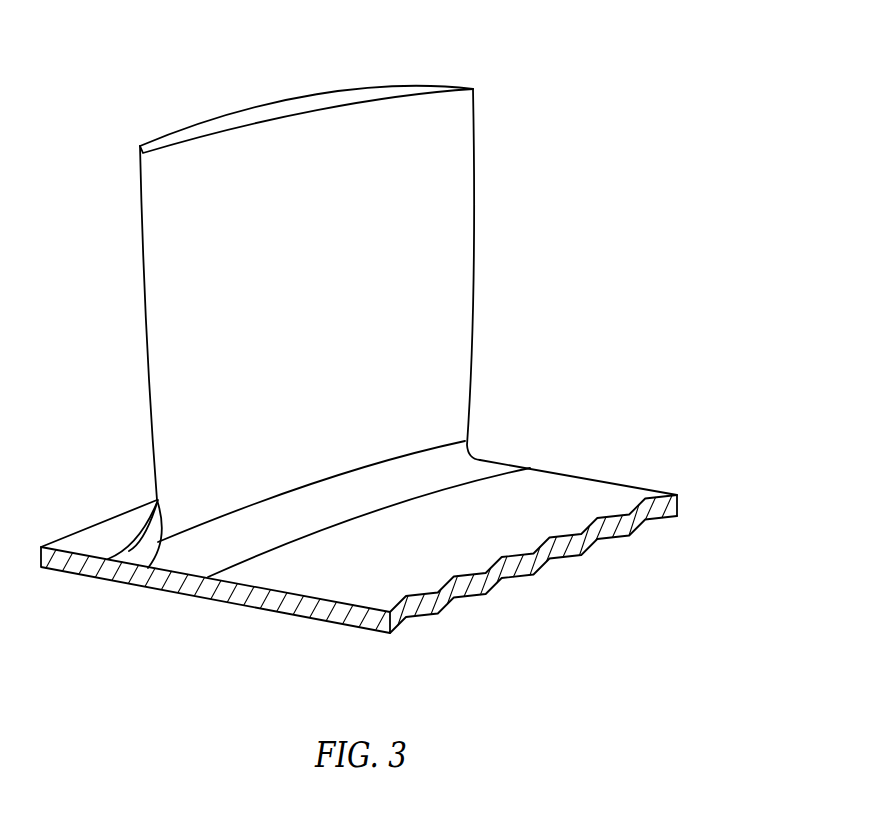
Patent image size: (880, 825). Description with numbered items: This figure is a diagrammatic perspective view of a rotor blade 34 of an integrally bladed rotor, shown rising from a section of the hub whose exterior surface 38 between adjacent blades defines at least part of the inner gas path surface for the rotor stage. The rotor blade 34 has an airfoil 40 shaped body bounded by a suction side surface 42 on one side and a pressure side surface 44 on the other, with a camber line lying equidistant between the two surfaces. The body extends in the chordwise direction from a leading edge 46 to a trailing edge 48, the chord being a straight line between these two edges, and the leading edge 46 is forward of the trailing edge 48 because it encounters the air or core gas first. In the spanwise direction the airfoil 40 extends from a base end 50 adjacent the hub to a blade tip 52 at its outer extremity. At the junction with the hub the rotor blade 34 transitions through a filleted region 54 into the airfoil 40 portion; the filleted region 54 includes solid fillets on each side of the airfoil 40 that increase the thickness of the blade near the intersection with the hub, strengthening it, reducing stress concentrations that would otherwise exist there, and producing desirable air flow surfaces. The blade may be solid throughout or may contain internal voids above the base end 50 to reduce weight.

The rotor blade 34 is at (547, 83).
The exterior surface 38 is at (597, 488).
The airfoil 40 is at (493, 252).
The suction side surface 42 is at (254, 100).
The pressure side surface 44 is at (295, 112).
The leading edge 46 is at (148, 355).
The trailing edge 48 is at (475, 335).
The base end 50 is at (290, 545).
The blade tip 52 is at (367, 94).
The filleted region 54 is at (189, 554).